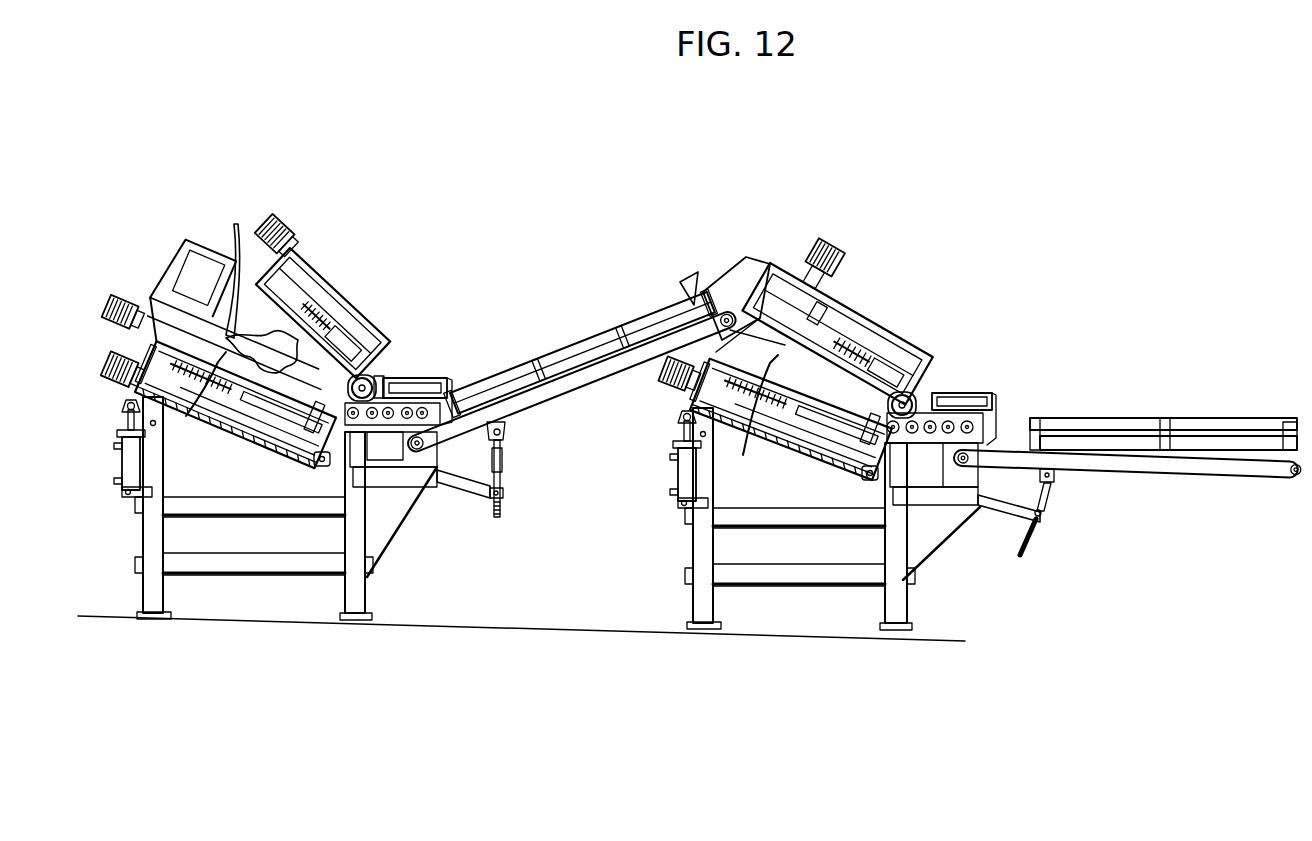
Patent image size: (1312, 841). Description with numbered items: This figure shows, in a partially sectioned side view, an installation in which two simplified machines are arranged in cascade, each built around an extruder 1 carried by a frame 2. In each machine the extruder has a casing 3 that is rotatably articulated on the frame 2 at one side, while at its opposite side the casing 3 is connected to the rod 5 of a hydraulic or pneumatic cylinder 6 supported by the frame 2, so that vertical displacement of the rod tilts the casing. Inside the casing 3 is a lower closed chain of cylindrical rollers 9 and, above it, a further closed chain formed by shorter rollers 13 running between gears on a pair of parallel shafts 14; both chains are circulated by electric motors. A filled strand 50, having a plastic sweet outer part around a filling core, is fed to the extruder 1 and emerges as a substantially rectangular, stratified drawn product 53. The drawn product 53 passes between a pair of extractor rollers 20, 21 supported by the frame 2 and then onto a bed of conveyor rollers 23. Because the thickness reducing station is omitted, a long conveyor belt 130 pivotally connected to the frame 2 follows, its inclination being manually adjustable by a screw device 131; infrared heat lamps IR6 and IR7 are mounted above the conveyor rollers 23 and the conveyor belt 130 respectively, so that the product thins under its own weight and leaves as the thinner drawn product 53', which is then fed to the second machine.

The extruder 1 is at (351, 241).
The frame 2 is at (153, 545).
The casing 3 is at (256, 445).
The rod 5 is at (130, 424).
The hydraulic or pneumatic cylinder 6 is at (126, 465).
The rollers 9 is at (186, 420).
The rollers 13 is at (330, 308).
The parallel shafts 14 is at (292, 262).
The extractor roller 20 is at (324, 455).
The extractor roller 21 is at (364, 384).
The conveyor rollers 23 is at (388, 418).
The filled strand 50 is at (231, 230).
The drawn product 53 is at (418, 347).
The drawn product 53' is at (676, 257).
The conveyor belt 130 is at (582, 400).
The screw device 131 is at (513, 478).
The infrared heat lamp IR6 is at (425, 386).
The infrared heat lamp IR7 is at (545, 355).